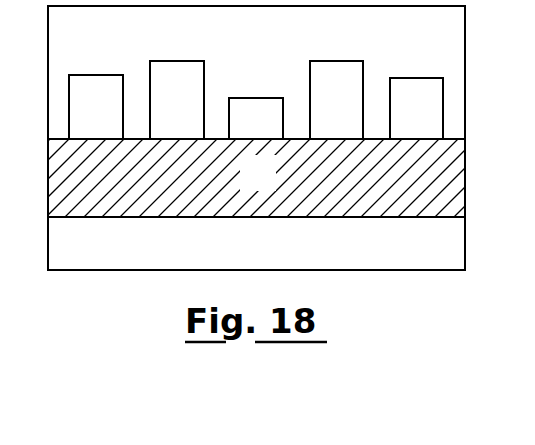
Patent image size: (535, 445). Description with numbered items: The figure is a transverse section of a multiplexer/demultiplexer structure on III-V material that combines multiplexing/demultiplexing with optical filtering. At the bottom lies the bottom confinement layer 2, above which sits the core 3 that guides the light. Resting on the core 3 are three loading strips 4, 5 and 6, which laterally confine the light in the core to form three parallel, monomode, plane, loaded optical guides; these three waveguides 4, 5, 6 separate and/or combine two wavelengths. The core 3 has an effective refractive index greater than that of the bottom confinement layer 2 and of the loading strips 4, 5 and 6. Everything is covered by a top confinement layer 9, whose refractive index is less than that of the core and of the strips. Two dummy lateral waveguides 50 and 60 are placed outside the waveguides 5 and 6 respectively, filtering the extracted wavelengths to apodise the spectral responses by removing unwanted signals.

The bottom confinement layer 2 is at (248, 257).
The core 3 is at (248, 187).
The loading strip 4 is at (248, 133).
The loading strip 5 is at (327, 115).
The loading strip 6 is at (169, 105).
The top confinement layer 9 is at (248, 50).
The dummy lateral waveguide 50 is at (403, 120).
The dummy lateral waveguide 60 is at (82, 119).